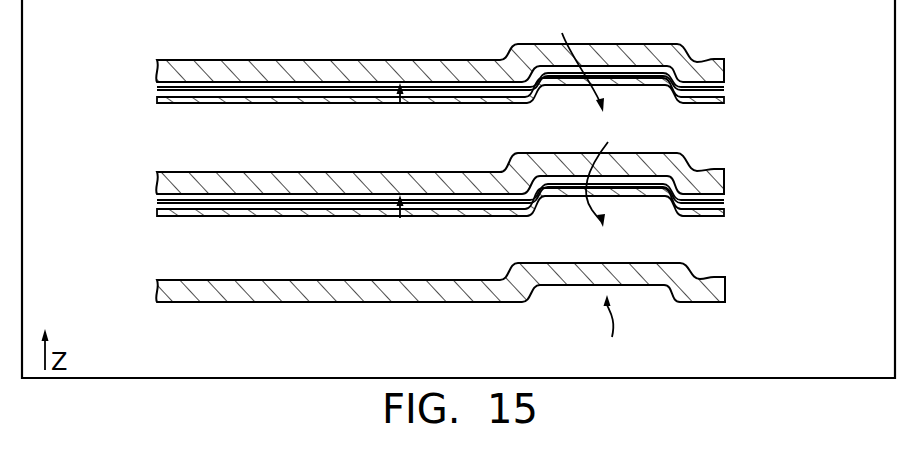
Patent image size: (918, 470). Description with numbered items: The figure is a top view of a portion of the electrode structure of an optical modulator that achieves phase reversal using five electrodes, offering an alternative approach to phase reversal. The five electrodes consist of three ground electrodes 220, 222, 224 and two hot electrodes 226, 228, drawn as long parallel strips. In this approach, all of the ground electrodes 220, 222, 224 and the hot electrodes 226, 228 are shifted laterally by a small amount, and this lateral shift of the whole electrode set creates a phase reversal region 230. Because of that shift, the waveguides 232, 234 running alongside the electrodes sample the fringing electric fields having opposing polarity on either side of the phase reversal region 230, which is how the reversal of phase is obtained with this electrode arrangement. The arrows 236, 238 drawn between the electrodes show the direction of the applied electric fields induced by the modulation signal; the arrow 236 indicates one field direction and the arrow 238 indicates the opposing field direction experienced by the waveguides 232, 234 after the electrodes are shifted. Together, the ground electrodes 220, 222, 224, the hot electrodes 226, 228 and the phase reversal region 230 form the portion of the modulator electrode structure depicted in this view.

The ground electrode 220 is at (247, 70).
The ground electrode 222 is at (230, 183).
The ground electrode 224 is at (220, 293).
The hot electrode 226 is at (263, 101).
The hot electrode 228 is at (341, 214).
The phase reversal region 230 is at (612, 331).
The waveguide 232 is at (695, 90).
The waveguide 234 is at (710, 198).
The arrow 236 is at (403, 101).
The arrow 238 is at (575, 122).